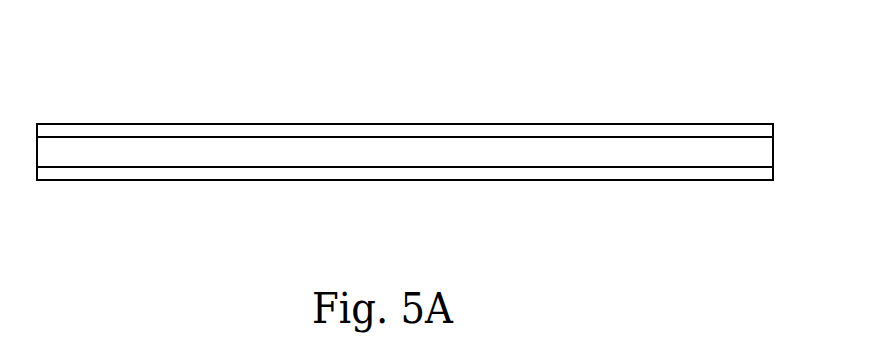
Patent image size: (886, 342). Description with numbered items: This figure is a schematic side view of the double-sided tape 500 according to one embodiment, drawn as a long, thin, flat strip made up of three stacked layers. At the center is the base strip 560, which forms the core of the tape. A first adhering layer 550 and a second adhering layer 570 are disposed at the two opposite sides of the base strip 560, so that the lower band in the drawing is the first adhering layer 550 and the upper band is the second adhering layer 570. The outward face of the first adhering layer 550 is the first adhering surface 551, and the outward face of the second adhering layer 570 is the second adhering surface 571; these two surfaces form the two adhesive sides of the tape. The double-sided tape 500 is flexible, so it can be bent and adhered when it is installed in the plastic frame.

The double-sided tape 500 is at (845, 44).
The second adhering surface 571 is at (100, 122).
The second adhering layer 570 is at (667, 132).
The base strip 560 is at (768, 152).
The first adhering layer 550 is at (667, 172).
The first adhering surface 551 is at (100, 181).